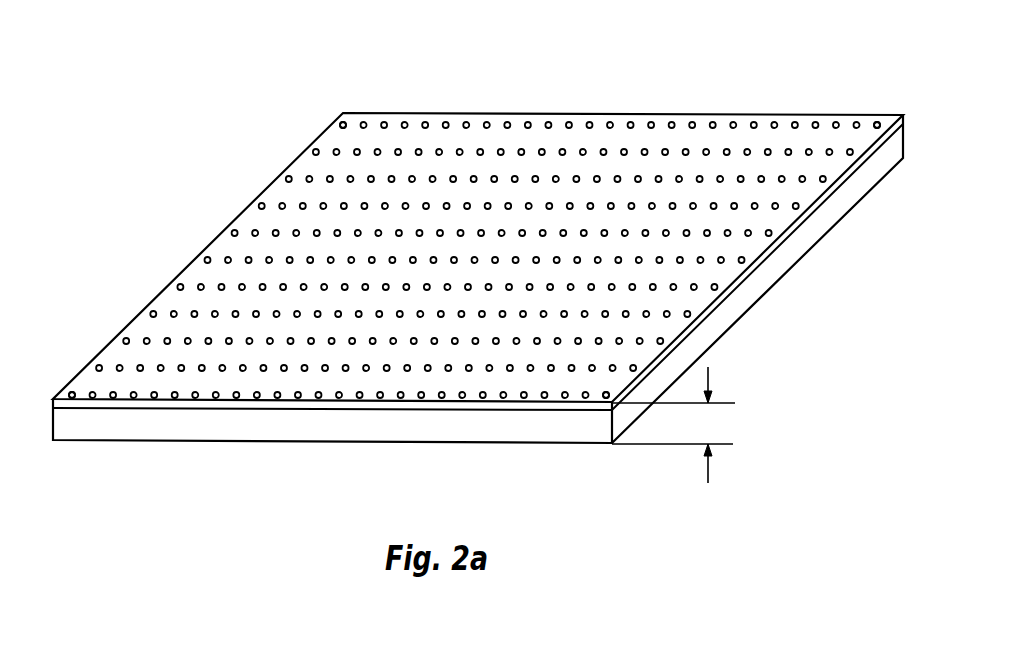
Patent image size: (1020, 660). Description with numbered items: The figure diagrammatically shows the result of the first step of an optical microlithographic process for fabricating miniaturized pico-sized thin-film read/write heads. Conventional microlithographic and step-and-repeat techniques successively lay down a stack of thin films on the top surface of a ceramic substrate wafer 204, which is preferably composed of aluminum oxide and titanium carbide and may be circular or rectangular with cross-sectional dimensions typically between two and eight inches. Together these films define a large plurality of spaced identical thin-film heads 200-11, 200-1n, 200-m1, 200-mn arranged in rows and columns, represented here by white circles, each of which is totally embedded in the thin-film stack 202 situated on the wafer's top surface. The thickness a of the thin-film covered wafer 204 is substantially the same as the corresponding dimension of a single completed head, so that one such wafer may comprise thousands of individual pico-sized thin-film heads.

The wafer 204 is at (582, 70).
The thin-film stack 202 is at (762, 255).
The thin-film head 200-11 is at (343, 112).
The thin-film head 200-1n is at (877, 122).
The thin-film head 200-m1 is at (72, 398).
The thin-film head 200-mn is at (606, 400).
The thickness a is at (673, 425).